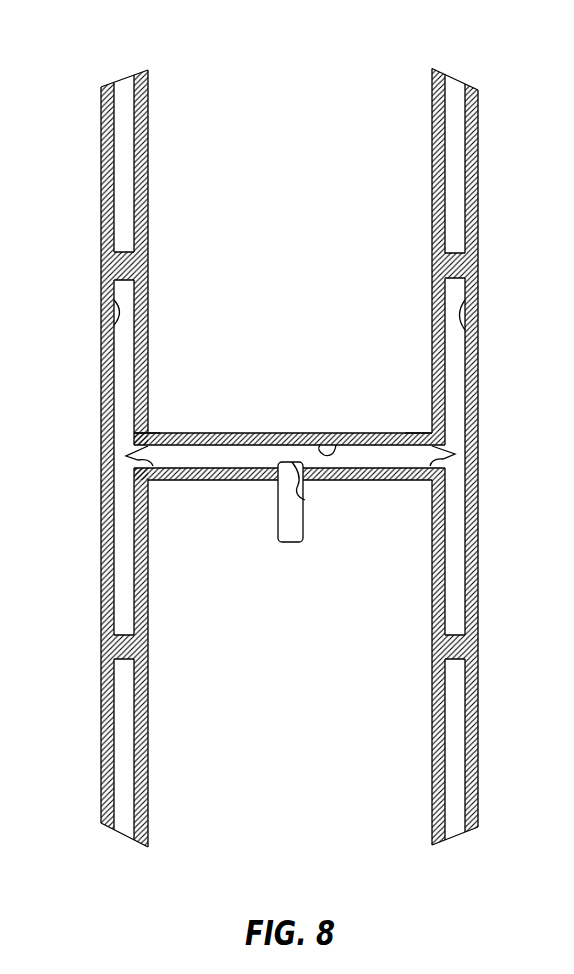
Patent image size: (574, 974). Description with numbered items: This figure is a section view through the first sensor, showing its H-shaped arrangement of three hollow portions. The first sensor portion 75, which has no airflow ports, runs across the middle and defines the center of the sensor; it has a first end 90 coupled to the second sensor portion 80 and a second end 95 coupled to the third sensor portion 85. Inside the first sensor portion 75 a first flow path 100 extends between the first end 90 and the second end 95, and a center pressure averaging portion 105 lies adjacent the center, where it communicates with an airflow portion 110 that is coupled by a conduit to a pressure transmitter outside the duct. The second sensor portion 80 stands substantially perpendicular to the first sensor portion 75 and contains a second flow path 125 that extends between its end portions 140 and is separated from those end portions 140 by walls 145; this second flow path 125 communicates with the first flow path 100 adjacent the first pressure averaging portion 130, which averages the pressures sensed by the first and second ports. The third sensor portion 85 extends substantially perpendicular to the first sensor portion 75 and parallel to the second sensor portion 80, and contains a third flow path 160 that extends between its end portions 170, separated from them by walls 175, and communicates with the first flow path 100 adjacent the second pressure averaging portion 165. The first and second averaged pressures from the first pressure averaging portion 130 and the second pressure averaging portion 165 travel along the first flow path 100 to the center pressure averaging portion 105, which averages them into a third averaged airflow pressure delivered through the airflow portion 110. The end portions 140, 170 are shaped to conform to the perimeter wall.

The first sensor portion 75 is at (228, 432).
The second sensor portion 80 is at (107, 377).
The third sensor portion 85 is at (478, 387).
The first end 90 is at (153, 433).
The second end 95 is at (432, 433).
The first flow path 100 is at (336, 433).
The center pressure averaging portion 105 is at (305, 500).
The airflow portion 110 is at (303, 532).
The second flow path 125 is at (102, 325).
The first pressure averaging portion 130 is at (153, 466).
The end portions 140 is at (107, 80).
The walls 145 is at (135, 253).
The third flow path 160 is at (470, 330).
The second pressure averaging portion 165 is at (430, 466).
The end portions 170 is at (468, 83).
The walls 175 is at (450, 267).